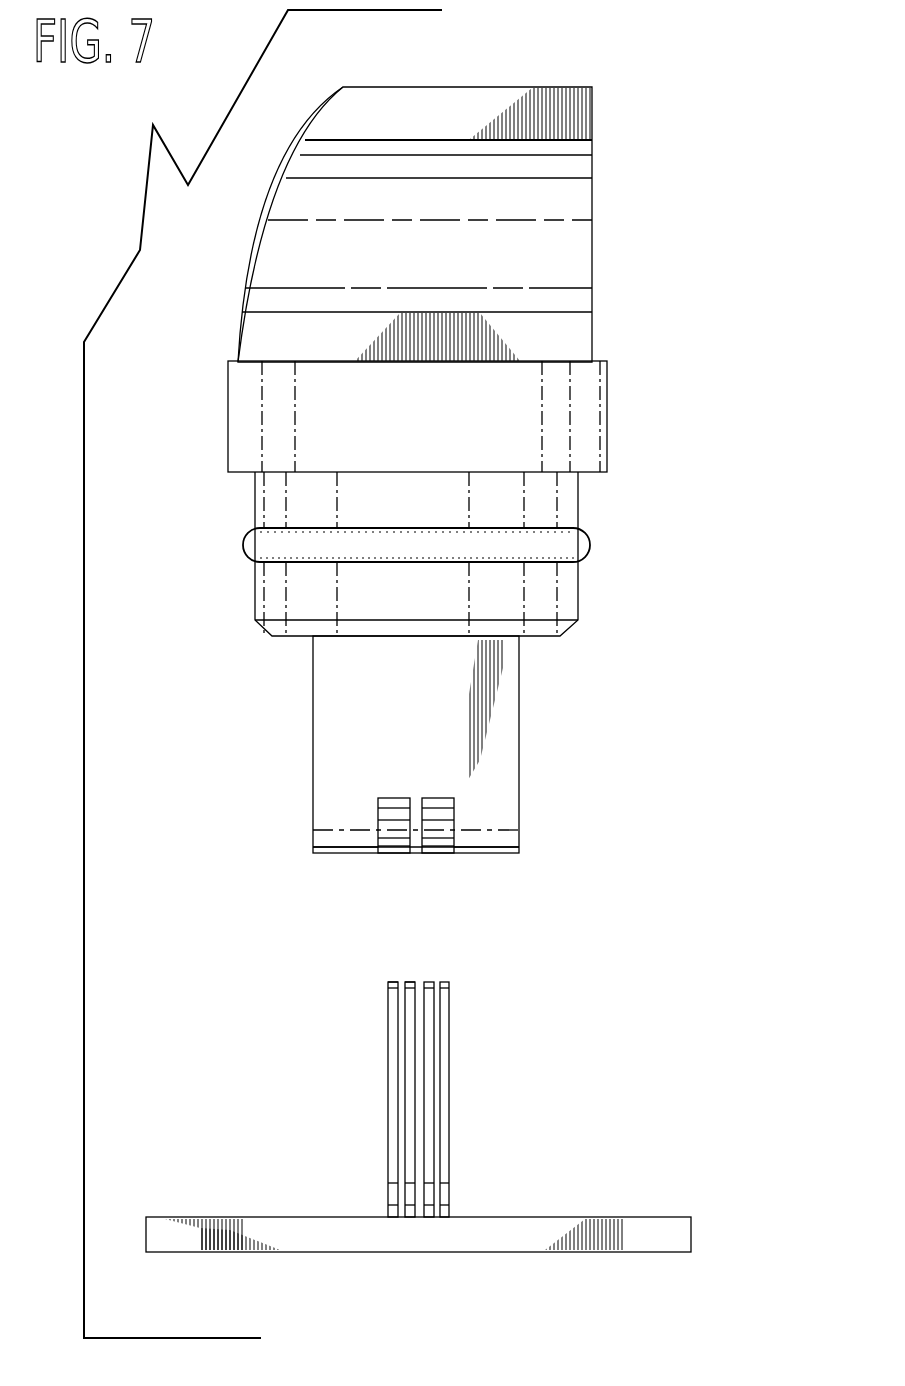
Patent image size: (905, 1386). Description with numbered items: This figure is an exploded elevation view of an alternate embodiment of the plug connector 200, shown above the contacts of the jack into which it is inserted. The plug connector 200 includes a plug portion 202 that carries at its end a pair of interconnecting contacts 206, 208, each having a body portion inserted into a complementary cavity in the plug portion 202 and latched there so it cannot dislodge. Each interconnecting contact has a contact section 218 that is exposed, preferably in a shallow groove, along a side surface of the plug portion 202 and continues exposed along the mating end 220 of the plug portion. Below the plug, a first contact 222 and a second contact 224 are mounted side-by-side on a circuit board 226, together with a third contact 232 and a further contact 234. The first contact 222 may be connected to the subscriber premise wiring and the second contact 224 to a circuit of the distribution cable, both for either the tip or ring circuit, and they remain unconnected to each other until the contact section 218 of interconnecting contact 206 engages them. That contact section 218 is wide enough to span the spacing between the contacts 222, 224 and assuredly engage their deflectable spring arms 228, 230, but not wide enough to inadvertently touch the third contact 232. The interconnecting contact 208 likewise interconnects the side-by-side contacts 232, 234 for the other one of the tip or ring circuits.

The plug connector 200 is at (612, 535).
The plug portion 202 is at (500, 738).
The interconnecting contact 206 is at (388, 798).
The interconnecting contact 208 is at (456, 823).
The contact section 218 is at (390, 830).
The mating end 220 is at (483, 856).
The first contact 222 is at (386, 1093).
The second contact 224 is at (386, 1150).
The circuit board 226 is at (522, 1235).
The deflectable spring arm 228 is at (390, 983).
The deflectable spring arm 230 is at (405, 982).
The third contact 232 is at (436, 1085).
The contact 234 is at (452, 1150).